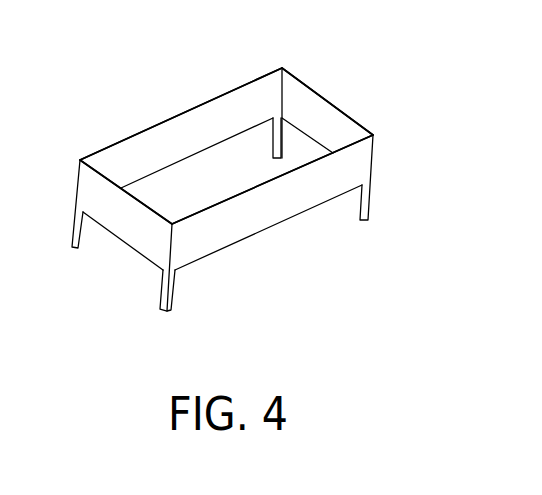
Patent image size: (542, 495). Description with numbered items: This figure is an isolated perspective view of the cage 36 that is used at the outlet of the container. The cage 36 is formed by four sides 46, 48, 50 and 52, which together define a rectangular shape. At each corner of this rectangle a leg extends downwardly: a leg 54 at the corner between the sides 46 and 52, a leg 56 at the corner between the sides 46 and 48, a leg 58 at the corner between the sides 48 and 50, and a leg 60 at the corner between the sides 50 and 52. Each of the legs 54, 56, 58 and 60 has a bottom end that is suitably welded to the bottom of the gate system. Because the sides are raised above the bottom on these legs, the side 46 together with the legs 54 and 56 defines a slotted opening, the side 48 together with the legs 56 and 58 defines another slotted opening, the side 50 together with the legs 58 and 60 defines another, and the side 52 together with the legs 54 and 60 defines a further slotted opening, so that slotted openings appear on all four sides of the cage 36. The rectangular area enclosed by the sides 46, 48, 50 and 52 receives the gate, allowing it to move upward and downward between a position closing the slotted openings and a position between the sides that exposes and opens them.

The cage 36 is at (312, 90).
The side 46 is at (170, 120).
The side 48 is at (353, 120).
The side 50 is at (265, 220).
The side 52 is at (152, 248).
The leg 54 is at (72, 225).
The leg 56 is at (272, 150).
The leg 58 is at (370, 205).
The leg 60 is at (173, 297).